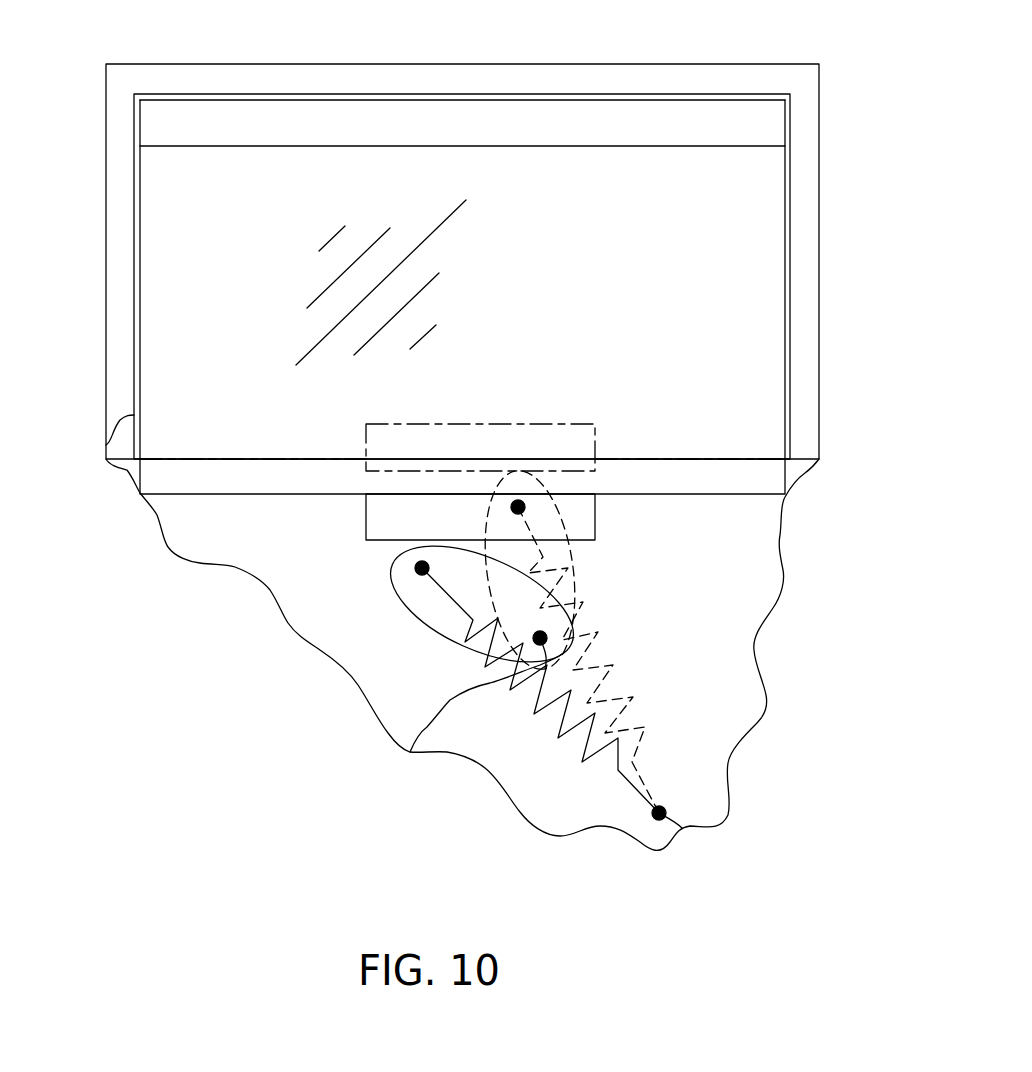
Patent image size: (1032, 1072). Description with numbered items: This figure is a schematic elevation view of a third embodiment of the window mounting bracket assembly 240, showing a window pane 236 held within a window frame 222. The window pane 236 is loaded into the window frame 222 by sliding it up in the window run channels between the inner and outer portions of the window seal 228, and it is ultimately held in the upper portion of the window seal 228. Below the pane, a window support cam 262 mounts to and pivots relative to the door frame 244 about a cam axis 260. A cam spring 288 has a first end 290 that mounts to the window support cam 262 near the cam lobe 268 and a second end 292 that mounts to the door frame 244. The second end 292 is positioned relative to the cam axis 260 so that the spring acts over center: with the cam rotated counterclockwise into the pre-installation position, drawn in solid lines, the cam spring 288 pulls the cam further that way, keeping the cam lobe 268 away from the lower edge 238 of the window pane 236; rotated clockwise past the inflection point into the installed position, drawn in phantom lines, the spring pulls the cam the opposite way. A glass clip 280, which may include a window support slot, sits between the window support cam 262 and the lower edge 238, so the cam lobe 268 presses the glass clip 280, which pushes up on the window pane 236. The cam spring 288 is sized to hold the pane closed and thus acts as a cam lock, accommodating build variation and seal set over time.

The window frame 222 is at (106, 216).
The window seal 228 is at (106, 445).
The window pane 236 is at (618, 146).
The lower edge 238 is at (172, 494).
The window mounting bracket assembly 240 is at (777, 678).
The door frame 244 is at (819, 190).
The cam axis 260 is at (433, 720).
The window support cam 262 is at (428, 618).
The cam lobe 268 is at (397, 557).
The glass clip 280 is at (595, 517).
The cam spring 288 is at (595, 758).
The first end 290 is at (422, 568).
The second end 292 is at (682, 828).